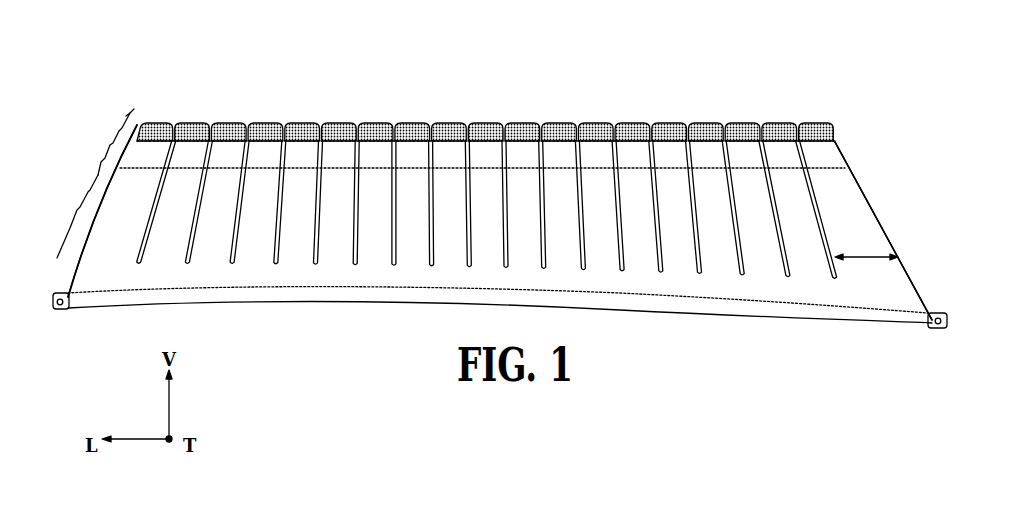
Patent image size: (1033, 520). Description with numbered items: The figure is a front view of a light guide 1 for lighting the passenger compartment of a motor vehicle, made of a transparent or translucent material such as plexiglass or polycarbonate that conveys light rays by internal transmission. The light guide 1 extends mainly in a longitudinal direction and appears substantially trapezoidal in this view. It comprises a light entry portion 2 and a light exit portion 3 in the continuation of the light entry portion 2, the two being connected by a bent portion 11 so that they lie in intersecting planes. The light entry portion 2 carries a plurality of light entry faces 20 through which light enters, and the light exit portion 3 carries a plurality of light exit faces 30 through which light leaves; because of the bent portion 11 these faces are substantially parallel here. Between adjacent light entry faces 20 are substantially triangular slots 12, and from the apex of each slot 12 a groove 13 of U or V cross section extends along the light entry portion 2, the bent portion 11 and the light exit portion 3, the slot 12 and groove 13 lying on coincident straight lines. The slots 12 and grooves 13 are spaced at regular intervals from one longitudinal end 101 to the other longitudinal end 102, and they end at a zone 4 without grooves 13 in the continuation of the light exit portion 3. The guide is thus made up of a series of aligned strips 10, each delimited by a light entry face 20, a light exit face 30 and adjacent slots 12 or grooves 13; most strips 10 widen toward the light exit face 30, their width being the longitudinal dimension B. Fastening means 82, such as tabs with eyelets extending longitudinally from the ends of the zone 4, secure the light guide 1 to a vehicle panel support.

The light guide 1 is at (487, 191).
The light entry portion 2 is at (124, 116).
The light exit portion 3 is at (80, 207).
The zone without grooves 4 is at (53, 306).
The strip 10 is at (253, 245).
The bent portion 11 is at (113, 143).
The slot 12 is at (762, 122).
The groove 13 is at (818, 198).
The light entry face 20 is at (232, 122).
The light exit face 30 is at (168, 250).
The fastening means 82 is at (930, 326).
The longitudinal end 101 is at (100, 188).
The longitudinal end 102 is at (863, 198).
The longitudinal dimension B is at (863, 257).